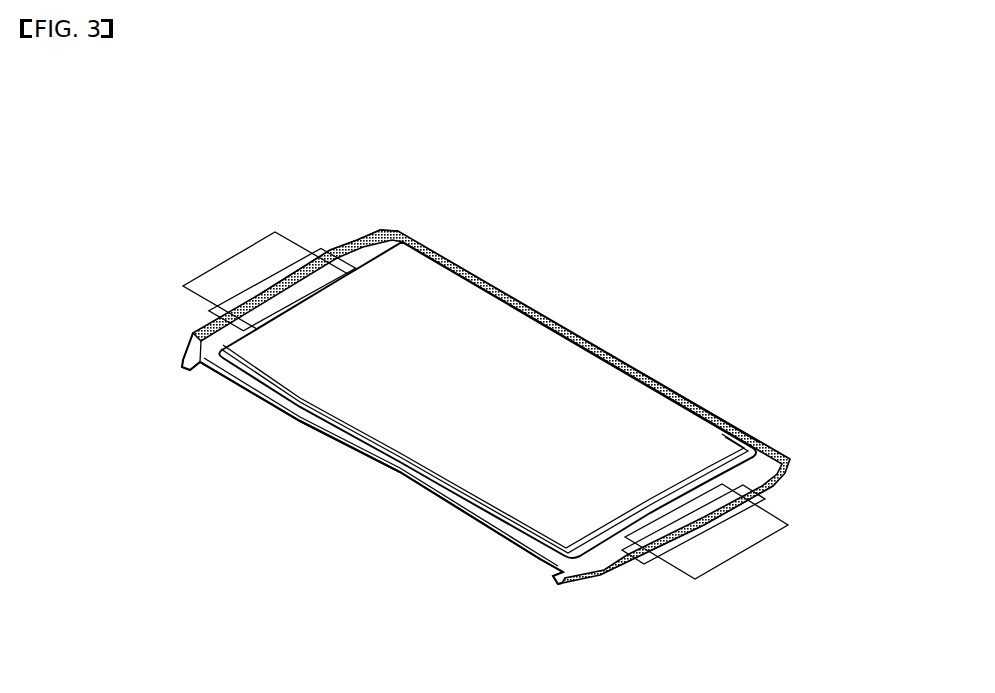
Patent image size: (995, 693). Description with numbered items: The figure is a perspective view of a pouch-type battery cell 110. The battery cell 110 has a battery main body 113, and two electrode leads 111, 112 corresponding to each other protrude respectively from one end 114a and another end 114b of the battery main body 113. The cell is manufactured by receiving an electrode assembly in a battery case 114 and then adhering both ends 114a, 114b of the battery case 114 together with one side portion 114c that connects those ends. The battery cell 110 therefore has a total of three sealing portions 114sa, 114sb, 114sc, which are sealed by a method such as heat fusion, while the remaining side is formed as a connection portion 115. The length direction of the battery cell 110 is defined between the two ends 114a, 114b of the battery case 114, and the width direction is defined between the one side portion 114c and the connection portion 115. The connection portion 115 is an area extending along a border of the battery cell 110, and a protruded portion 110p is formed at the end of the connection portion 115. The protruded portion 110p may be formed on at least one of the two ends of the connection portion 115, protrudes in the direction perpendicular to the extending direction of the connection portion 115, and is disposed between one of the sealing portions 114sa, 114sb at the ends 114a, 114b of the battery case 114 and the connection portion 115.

The battery cell 110 is at (131, 117).
The protruded portion 110p is at (184, 357).
The electrode lead 111 is at (247, 264).
The electrode lead 112 is at (743, 550).
The battery main body 113 is at (497, 330).
The battery case 114 is at (778, 452).
The one end of the battery case 114a is at (371, 240).
The other end of the battery case 114b is at (593, 564).
The one side portion 114c is at (604, 352).
The sealing portion 114sa is at (345, 247).
The sealing portion 114sb is at (768, 487).
The sealing portion 114sc is at (703, 406).
The connection portion 115 is at (402, 472).